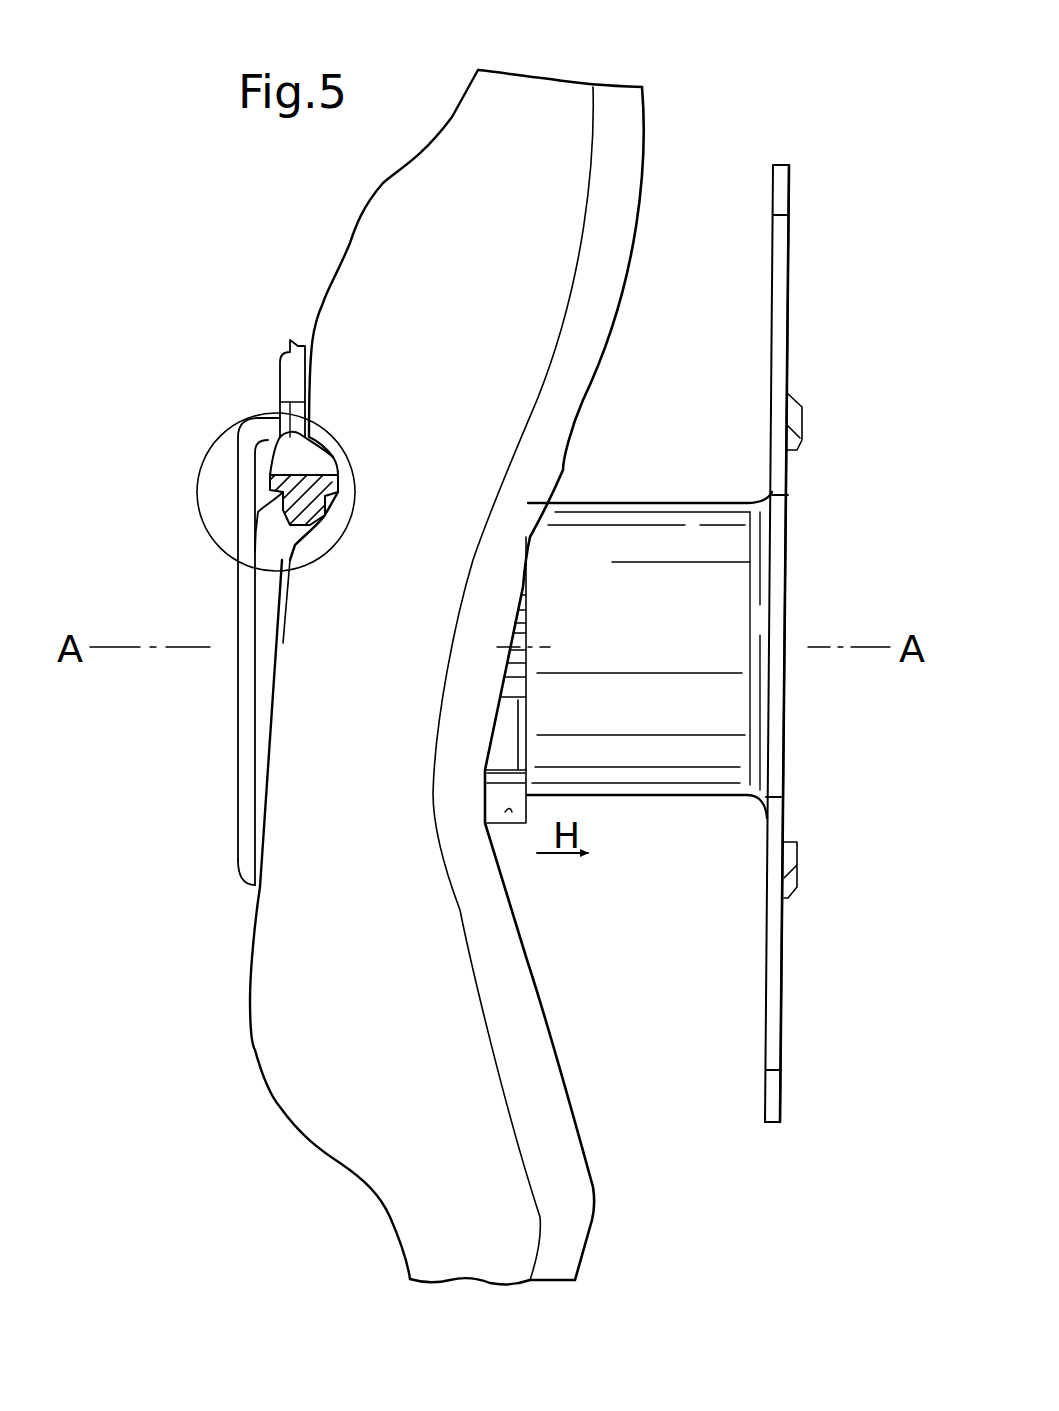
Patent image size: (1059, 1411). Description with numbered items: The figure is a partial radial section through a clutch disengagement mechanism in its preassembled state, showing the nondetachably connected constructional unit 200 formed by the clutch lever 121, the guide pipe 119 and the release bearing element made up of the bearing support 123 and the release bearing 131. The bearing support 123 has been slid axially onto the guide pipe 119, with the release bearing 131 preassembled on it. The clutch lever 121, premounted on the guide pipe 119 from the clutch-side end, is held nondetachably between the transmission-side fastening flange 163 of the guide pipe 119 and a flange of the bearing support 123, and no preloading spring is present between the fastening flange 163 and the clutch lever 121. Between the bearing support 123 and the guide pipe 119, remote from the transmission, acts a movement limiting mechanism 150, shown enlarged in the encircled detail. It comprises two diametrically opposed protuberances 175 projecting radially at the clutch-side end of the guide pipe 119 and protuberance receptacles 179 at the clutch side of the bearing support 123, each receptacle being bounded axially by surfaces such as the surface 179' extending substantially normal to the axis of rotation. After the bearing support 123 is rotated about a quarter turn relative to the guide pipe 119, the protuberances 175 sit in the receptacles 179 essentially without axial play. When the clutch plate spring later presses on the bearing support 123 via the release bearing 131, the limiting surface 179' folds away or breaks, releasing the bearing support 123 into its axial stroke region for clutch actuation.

The constructional unit 200 is at (243, 231).
The clutch lever 121 is at (623, 98).
The bearing support 123 is at (338, 478).
The guide pipe 119 is at (683, 527).
The fastening flange 163 is at (783, 277).
The release bearing 131 is at (292, 355).
The protuberance 175 is at (265, 540).
The protuberance receptacle 179 is at (225, 496).
The surface 179' is at (231, 503).
The movement limiting mechanism 150 is at (225, 428).